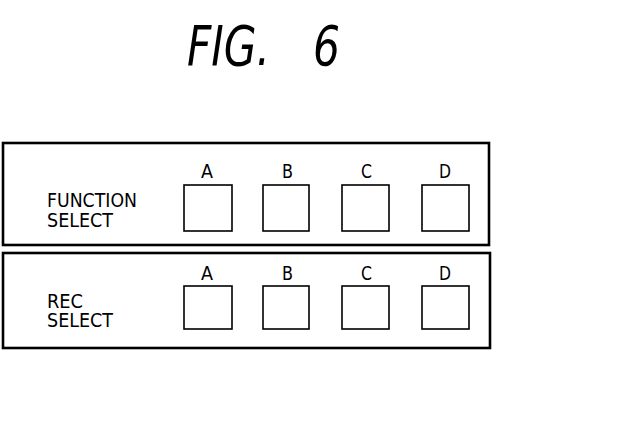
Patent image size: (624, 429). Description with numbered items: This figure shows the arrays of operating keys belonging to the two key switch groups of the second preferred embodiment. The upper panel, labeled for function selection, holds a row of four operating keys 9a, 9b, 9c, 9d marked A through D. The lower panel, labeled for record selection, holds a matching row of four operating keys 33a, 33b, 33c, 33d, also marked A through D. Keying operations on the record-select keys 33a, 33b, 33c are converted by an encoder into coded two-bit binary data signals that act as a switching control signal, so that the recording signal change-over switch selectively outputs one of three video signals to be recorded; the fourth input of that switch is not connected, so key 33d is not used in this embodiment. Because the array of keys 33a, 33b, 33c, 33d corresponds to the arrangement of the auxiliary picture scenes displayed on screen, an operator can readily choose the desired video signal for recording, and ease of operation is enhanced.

The operating key 9a is at (228, 185).
The operating key 9b is at (302, 185).
The operating key 9c is at (386, 185).
The operating key 9d is at (465, 185).
The operating key 33a is at (223, 318).
The operating key 33b is at (296, 320).
The operating key 33c is at (377, 320).
The operating key 33d is at (458, 320).